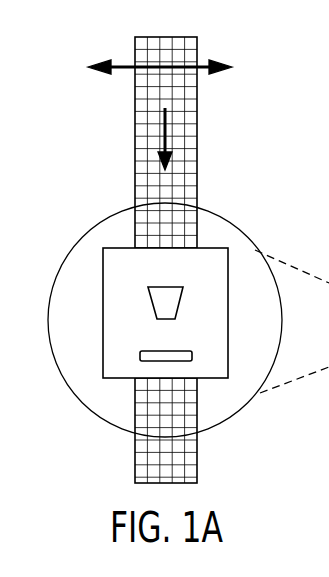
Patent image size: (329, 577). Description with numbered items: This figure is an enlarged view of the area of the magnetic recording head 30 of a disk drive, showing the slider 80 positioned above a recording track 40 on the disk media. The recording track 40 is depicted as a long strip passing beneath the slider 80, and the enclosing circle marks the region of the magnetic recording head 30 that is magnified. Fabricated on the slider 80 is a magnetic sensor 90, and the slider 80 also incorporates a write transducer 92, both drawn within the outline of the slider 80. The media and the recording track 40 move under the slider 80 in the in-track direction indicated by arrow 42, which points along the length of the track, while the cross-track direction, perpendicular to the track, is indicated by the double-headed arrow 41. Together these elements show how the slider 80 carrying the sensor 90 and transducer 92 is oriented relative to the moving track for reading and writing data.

The magnetic recording head 30 is at (328, 415).
The recording track 40 is at (166, 37).
The arrow indicating cross-track direction 41 is at (232, 67).
The arrow indicating in-track direction 42 is at (166, 137).
The slider 80 is at (103, 317).
The magnetic sensor 90 is at (155, 361).
The write transducer 92 is at (148, 287).